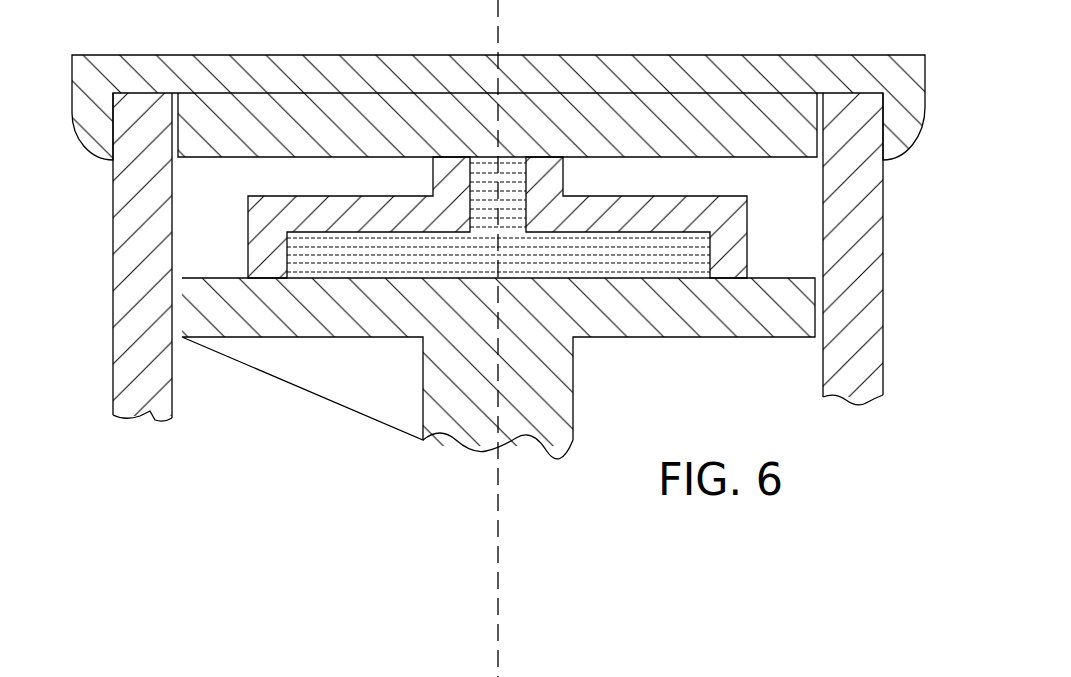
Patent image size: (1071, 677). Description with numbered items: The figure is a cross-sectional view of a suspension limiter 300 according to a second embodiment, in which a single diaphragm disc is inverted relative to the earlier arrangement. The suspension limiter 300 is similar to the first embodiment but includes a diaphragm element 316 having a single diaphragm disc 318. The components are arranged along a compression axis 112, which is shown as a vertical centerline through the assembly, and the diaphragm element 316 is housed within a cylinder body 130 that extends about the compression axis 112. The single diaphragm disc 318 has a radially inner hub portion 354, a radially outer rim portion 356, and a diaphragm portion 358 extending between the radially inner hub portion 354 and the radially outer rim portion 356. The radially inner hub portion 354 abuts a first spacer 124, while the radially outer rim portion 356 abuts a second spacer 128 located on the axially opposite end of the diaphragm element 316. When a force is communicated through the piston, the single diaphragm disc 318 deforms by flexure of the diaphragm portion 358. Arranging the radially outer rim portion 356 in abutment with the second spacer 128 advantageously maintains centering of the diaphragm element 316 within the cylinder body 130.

The compression axis 112 is at (498, 513).
The first spacer 124 is at (337, 113).
The second spacer 128 is at (223, 317).
The cylinder body 130 is at (138, 364).
The suspension limiter 300 is at (138, 484).
The diaphragm element 316 is at (755, 277).
The single diaphragm disc 318 is at (390, 298).
The radially inner hub portion 354 is at (547, 183).
The radially outer rim portion 356 is at (740, 255).
The diaphragm portion 358 is at (680, 217).